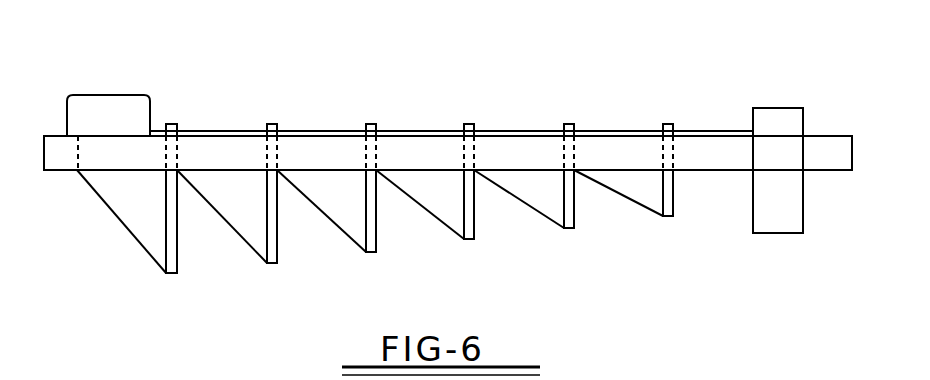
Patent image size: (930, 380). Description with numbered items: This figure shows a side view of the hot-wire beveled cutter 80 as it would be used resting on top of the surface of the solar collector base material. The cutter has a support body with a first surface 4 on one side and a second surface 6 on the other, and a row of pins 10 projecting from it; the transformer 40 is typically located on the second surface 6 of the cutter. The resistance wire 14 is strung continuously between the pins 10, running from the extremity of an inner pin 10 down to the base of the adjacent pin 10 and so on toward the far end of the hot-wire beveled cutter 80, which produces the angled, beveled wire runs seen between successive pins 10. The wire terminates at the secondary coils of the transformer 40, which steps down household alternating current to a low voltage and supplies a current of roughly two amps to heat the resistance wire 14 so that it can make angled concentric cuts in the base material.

The first surface 4 is at (112, 171).
The second surface 6 is at (508, 135).
The pin 10 is at (278, 233).
The resistance wire 14 is at (620, 196).
The transformer 40 is at (119, 104).
The hot-wire beveled cutter 80 is at (713, 72).